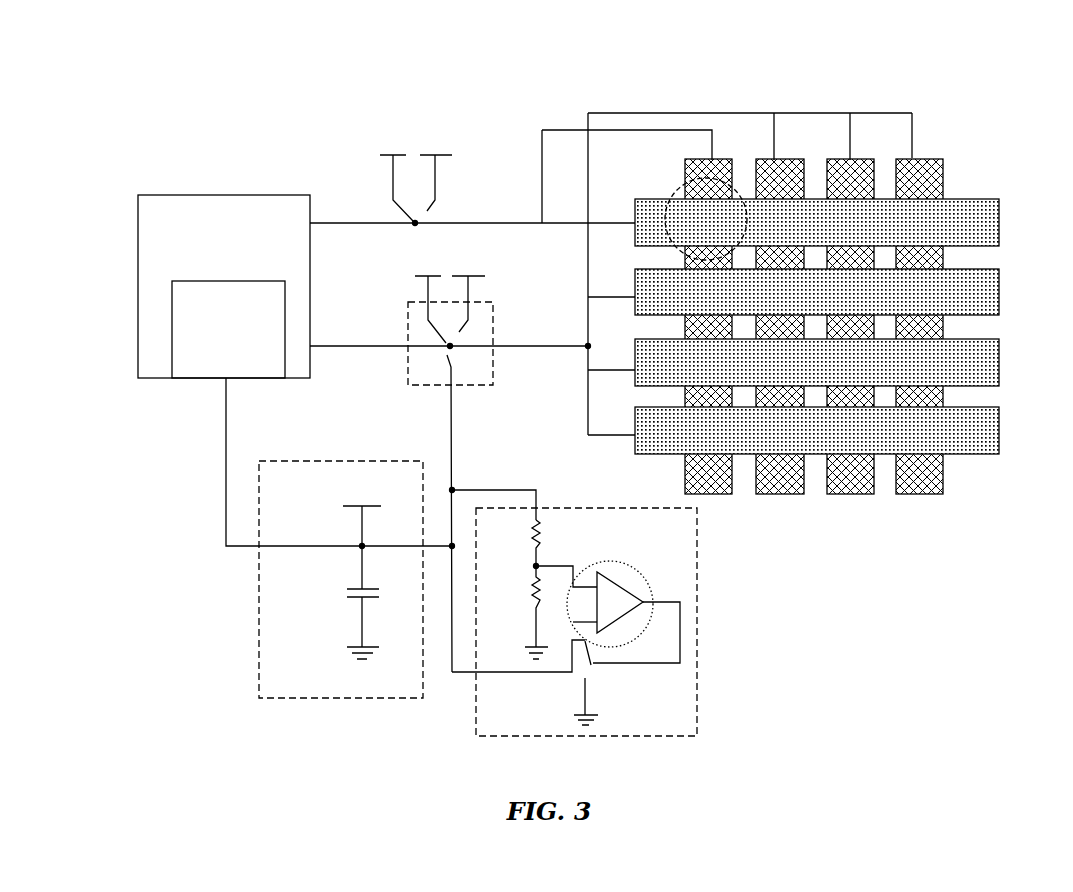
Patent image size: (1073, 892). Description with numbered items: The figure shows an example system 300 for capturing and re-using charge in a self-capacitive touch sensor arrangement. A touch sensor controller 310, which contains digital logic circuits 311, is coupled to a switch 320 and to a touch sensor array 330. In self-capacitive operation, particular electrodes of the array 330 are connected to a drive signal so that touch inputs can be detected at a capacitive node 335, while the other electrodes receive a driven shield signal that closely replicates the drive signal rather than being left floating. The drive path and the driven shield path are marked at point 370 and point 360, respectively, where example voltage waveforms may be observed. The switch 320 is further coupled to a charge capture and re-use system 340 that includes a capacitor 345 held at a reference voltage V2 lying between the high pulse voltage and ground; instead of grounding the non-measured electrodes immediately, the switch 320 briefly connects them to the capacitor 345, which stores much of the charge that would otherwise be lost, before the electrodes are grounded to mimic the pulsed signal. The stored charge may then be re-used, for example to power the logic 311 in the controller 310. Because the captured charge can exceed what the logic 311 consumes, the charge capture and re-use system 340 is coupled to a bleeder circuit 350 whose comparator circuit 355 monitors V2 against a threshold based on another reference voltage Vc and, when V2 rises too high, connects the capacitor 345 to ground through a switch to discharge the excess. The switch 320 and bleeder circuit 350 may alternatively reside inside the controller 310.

The system 300 is at (243, 93).
The touch sensor controller 310 is at (224, 286).
The digital logic circuits 311 is at (228, 329).
The switch 320 is at (410, 388).
The touch sensor array 330 is at (798, 303).
The capacitive node 335 is at (680, 188).
The charge capture and re-use system 340 is at (307, 566).
The capacitor 345 is at (343, 587).
The bleeder circuit 350 is at (609, 613).
The comparator circuit 355 is at (628, 572).
The point 360 is at (588, 342).
The point 370 is at (540, 220).